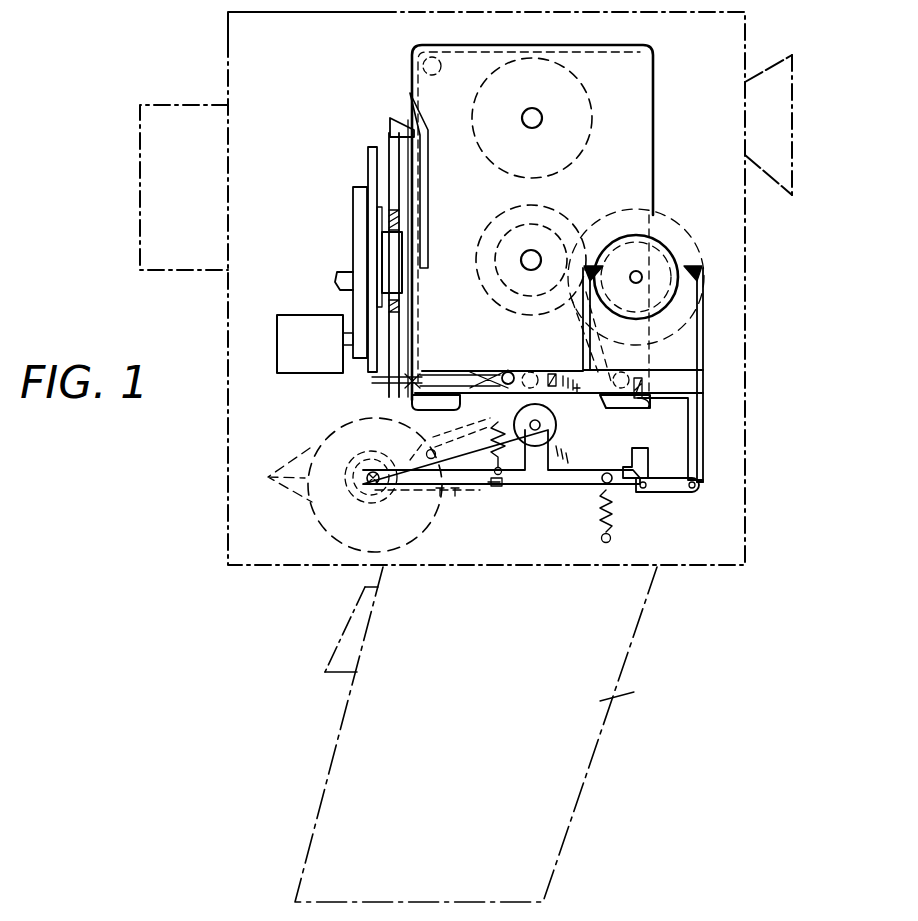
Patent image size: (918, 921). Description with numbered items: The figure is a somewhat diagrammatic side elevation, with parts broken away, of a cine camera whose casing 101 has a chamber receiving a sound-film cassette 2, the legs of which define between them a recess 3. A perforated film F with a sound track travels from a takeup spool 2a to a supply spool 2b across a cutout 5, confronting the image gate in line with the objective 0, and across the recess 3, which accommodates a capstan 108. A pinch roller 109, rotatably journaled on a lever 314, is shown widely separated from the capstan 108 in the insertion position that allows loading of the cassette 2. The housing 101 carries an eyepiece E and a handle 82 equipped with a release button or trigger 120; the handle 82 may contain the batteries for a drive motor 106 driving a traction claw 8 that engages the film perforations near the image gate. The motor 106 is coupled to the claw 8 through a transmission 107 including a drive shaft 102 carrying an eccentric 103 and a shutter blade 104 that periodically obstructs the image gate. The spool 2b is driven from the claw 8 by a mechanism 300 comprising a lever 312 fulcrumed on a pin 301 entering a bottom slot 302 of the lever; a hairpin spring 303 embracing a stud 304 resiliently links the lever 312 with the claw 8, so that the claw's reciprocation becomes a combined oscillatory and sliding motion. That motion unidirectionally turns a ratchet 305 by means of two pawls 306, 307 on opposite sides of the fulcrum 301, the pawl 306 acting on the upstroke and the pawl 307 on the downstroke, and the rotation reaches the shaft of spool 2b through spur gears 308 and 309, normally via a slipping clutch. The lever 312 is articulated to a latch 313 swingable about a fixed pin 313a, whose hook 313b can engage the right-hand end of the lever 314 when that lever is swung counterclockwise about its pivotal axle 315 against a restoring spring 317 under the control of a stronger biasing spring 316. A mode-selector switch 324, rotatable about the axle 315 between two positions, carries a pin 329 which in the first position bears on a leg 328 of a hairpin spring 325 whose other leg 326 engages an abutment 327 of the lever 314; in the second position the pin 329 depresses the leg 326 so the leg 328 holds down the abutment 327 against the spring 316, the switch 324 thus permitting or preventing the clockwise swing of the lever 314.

The objective 0 is at (163, 112).
The casing 101 is at (306, 64).
The transmission 107 is at (368, 141).
The shutter blade 104 is at (368, 158).
The drive shaft 102 is at (347, 271).
The drive motor 106 is at (303, 320).
The traction claw 8 is at (395, 120).
The cutout 5 is at (433, 125).
The sound-film cassette 2 is at (630, 91).
The takeup spool 2a is at (558, 72).
The supply spool 2b is at (490, 218).
The spur gear 309 is at (535, 228).
The spur gear 308 is at (608, 215).
The ratchet 305 is at (650, 234).
The pawl 306 is at (548, 300).
The eyepiece E is at (778, 120).
The eccentric 103 is at (405, 268).
The film F is at (420, 293).
The stud 304 is at (502, 366).
The capstan 108 is at (530, 371).
The recess 3 is at (566, 361).
The pawl 307 is at (702, 320).
The mechanism 300 is at (722, 318).
The bottom slot 302 is at (650, 390).
The hairpin spring 303 is at (408, 385).
The pin 301 is at (643, 405).
The lever 312 is at (703, 465).
The pin 329 is at (428, 452).
The leg 328 is at (492, 442).
The pinch roller 109 is at (557, 428).
The hook 313b is at (633, 462).
The mode-selector switch 324 is at (272, 482).
The pivotal axle 315 is at (356, 490).
The hairpin spring 325 is at (374, 500).
The leg 326 is at (455, 500).
The abutment 327 is at (489, 492).
The biasing spring 316 is at (510, 457).
The lever 314 is at (568, 485).
The latch 313 is at (672, 488).
The fixed pin 313a is at (643, 490).
The restoring spring 317 is at (603, 522).
The release button 120 is at (340, 643).
The handle 82 is at (622, 695).